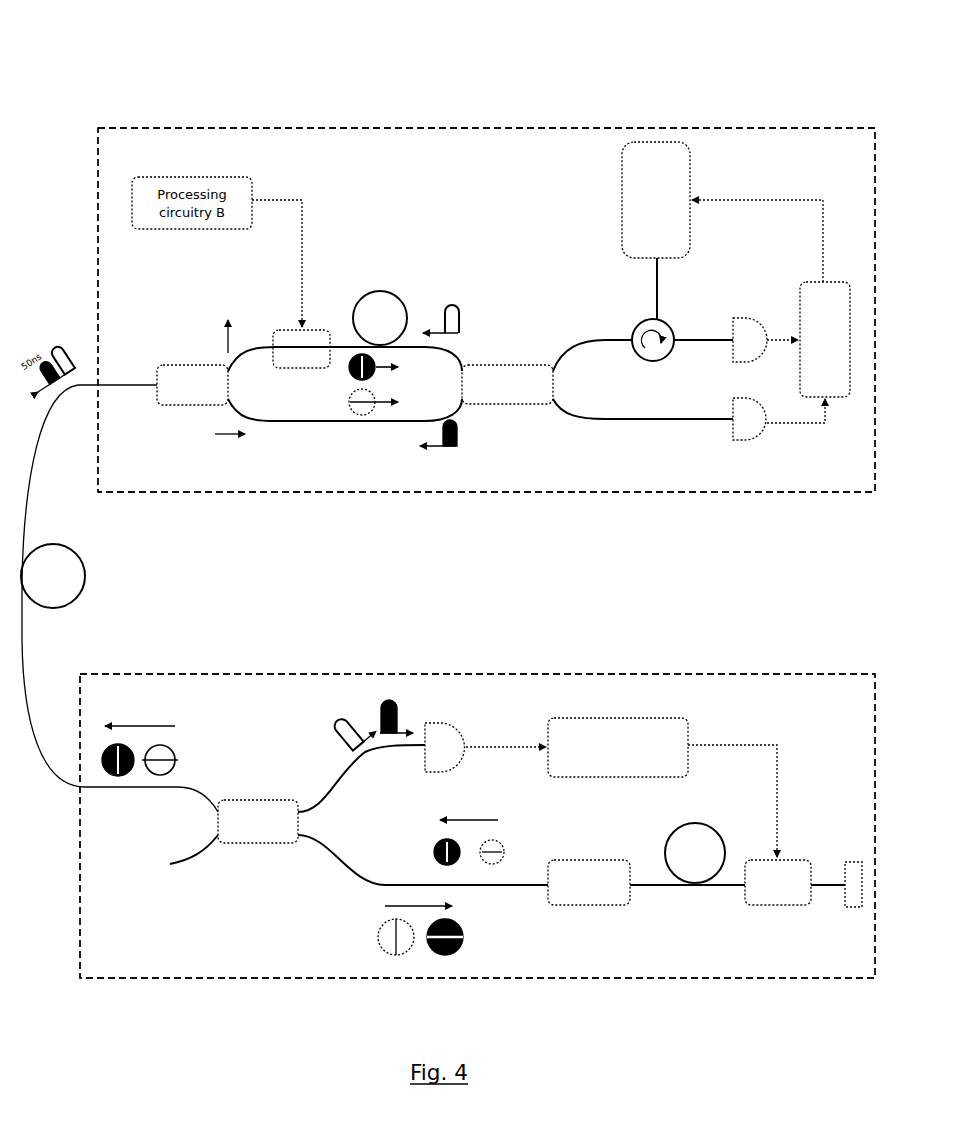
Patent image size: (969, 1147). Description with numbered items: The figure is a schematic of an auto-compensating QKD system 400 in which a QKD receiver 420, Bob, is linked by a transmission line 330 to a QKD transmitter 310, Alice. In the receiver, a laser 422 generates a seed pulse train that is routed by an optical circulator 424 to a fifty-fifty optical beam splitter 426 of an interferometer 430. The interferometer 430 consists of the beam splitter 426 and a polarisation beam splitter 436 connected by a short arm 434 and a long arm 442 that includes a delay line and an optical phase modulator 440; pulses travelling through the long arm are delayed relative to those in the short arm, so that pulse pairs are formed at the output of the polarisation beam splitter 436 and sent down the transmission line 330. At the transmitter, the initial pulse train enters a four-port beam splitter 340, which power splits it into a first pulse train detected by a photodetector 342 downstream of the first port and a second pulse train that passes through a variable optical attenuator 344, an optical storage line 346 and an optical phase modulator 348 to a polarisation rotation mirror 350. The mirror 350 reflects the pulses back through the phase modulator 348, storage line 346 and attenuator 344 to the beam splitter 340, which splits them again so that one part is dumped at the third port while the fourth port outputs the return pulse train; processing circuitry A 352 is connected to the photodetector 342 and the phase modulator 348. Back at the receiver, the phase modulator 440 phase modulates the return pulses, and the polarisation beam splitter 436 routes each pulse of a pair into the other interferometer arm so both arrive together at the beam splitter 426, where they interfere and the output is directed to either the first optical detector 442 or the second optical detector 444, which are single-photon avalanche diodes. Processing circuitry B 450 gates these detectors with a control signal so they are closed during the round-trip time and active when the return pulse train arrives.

The auto-compensating QKD system 400 is at (162, 96).
The QKD receiver 420 is at (486, 310).
The laser 422 is at (663, 162).
The optical circulator 424 is at (638, 328).
The optical beam splitter 426 is at (517, 370).
The interferometer 430 is at (380, 440).
The short arm 434 is at (323, 425).
The polarisation beam splitter 436 is at (167, 370).
The optical phase modulator 440 is at (272, 337).
The long arm / first optical detector 442 is at (392, 292).
The second optical detector 444 is at (748, 428).
The processing circuitry B 450 is at (812, 287).
The QKD transmitter 310 is at (477, 826).
The transmission line 330 is at (86, 570).
The optical beam splitter 340 is at (258, 808).
The photodetector 342 is at (454, 745).
The variable optical attenuator 344 is at (578, 895).
The optical storage line 346 is at (712, 822).
The optical phase modulator 348 is at (763, 897).
The polarisation rotation mirror 350 is at (857, 893).
The processing circuitry A 352 is at (670, 730).